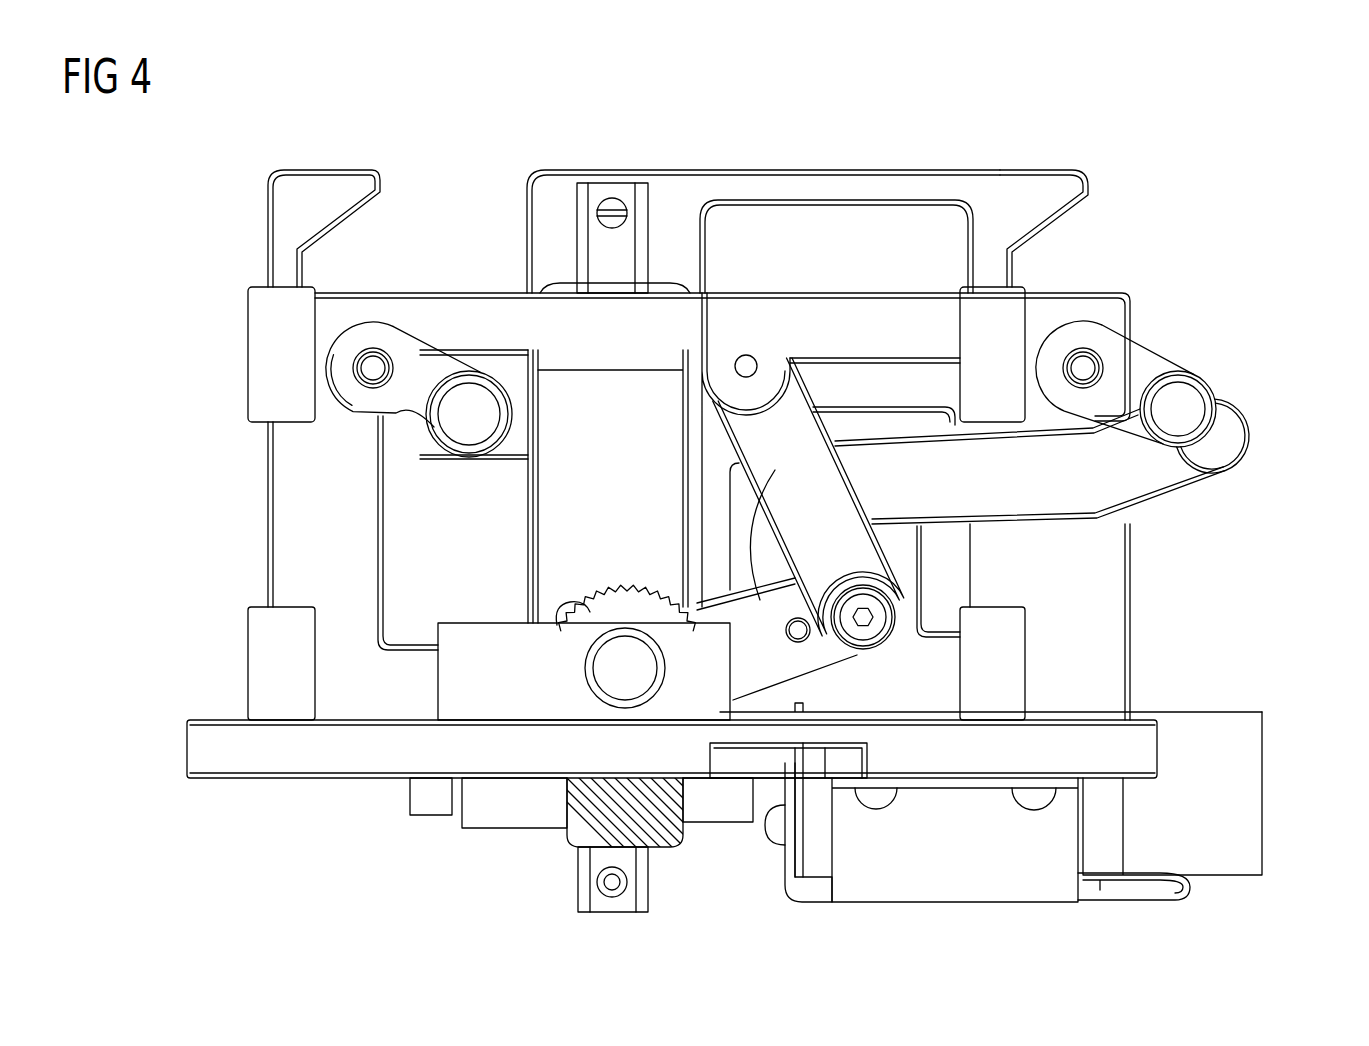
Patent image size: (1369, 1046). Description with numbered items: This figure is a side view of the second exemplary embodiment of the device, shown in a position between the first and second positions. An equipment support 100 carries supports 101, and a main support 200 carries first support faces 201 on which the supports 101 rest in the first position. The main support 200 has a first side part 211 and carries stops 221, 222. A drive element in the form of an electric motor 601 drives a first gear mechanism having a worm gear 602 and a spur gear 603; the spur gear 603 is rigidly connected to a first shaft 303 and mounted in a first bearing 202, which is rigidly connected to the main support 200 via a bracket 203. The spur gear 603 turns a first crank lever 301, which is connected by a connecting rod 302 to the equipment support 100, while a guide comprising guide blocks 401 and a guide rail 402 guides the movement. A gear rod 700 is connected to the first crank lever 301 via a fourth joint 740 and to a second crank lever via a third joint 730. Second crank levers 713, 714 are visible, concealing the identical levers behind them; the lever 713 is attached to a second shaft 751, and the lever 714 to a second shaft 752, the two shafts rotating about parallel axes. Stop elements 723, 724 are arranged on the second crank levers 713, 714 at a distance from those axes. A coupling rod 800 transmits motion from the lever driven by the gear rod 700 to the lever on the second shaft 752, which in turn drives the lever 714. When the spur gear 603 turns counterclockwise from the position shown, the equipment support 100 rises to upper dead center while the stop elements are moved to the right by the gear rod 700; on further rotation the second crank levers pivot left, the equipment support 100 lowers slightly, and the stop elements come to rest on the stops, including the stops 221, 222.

The equipment support 100 is at (1067, 305).
The supports 101 is at (258, 428).
The main support 200 is at (1140, 748).
The first support faces 201 is at (264, 602).
The first bearing 202 is at (623, 668).
The bracket 203 is at (465, 657).
The first side part 211 is at (1016, 190).
The stop 221 is at (1012, 270).
The stop 222 is at (386, 250).
The first crank lever 301 is at (795, 633).
The connecting rod 302 is at (835, 514).
The first shaft 303 is at (590, 680).
The guide blocks 401 is at (640, 466).
The guide rail 402 is at (630, 248).
The electric motor 601 is at (1240, 800).
The worm gear 602 is at (588, 822).
The spur gear 603 is at (612, 607).
The gear rod 700 is at (1148, 482).
The second crank lever 713 is at (1130, 370).
The second crank lever 714 is at (418, 367).
The stop element 723 is at (1190, 402).
The stop element 724 is at (466, 418).
The third joint 730 is at (1222, 442).
The fourth joint 740 is at (760, 722).
The second shaft 751 is at (1083, 368).
The second shaft 752 is at (373, 368).
The coupling rod 800 is at (519, 387).